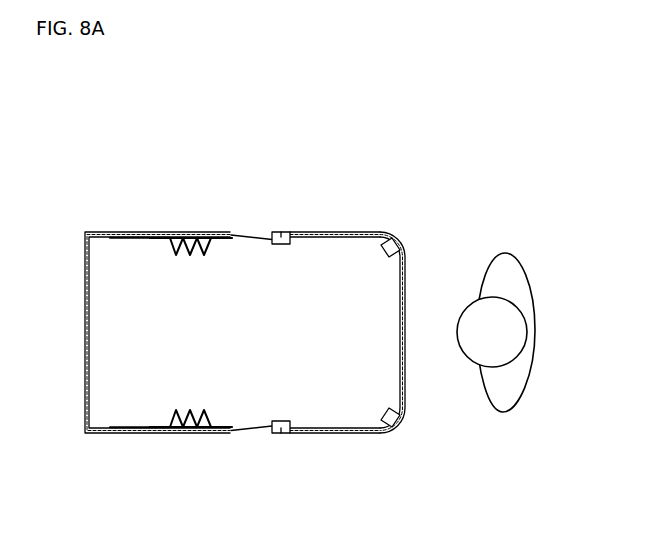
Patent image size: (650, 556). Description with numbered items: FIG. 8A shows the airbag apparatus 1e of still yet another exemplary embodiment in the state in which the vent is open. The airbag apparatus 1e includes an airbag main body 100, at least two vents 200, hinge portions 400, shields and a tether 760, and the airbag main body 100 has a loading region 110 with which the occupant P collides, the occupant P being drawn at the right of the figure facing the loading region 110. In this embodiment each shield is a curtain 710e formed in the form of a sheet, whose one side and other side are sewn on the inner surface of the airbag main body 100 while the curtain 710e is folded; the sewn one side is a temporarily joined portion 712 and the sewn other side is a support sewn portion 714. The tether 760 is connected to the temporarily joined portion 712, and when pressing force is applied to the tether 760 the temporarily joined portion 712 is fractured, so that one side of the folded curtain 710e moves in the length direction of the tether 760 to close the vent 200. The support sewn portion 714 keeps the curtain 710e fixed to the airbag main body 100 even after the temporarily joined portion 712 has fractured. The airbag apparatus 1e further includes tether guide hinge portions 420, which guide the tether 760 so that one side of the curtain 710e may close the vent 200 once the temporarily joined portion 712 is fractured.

The airbag apparatus 1e is at (97, 99).
The airbag main body 100 is at (105, 232).
The loading region 110 is at (405, 315).
The vent 200 is at (256, 232).
The hinge portion 400 is at (392, 238).
The tether guide hinge portion 420 is at (282, 232).
The curtain 710e is at (184, 233).
The temporarily joined portion 712 is at (215, 232).
The support sewn portion 714 is at (135, 232).
The tether 760 is at (340, 232).
The occupant P is at (505, 258).